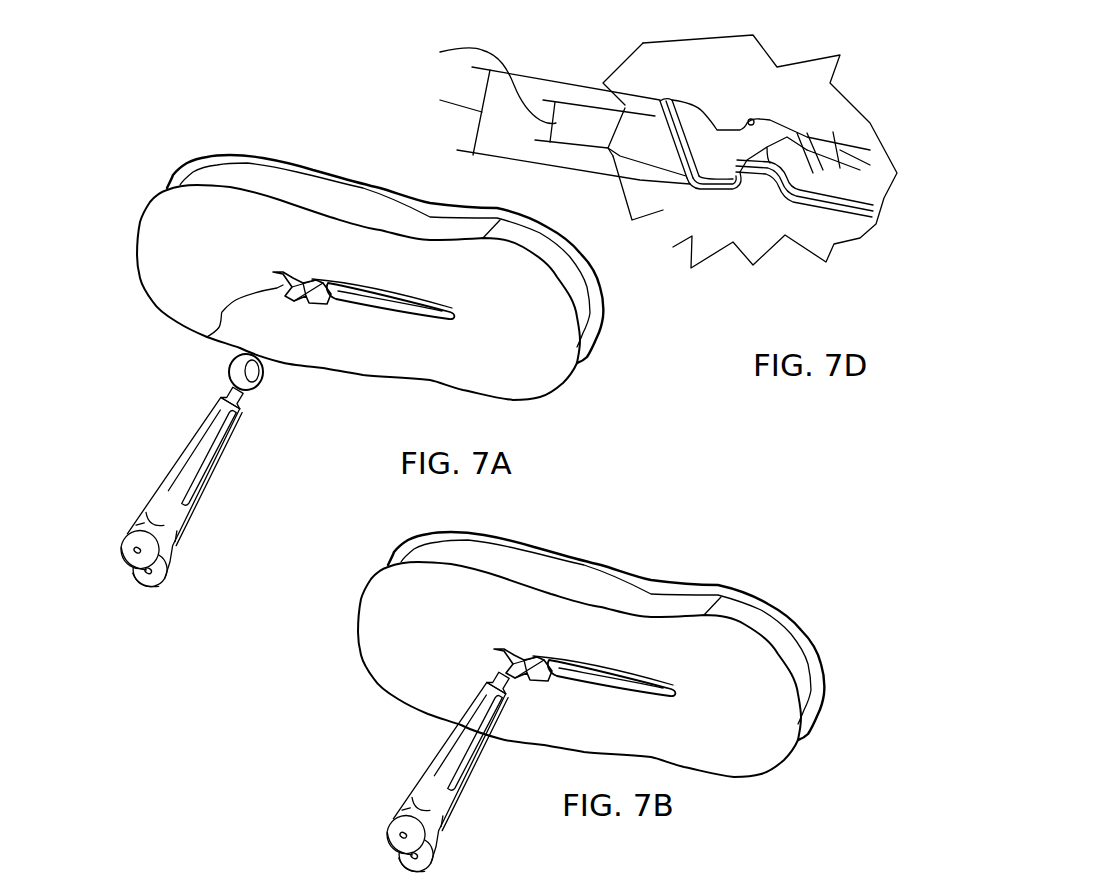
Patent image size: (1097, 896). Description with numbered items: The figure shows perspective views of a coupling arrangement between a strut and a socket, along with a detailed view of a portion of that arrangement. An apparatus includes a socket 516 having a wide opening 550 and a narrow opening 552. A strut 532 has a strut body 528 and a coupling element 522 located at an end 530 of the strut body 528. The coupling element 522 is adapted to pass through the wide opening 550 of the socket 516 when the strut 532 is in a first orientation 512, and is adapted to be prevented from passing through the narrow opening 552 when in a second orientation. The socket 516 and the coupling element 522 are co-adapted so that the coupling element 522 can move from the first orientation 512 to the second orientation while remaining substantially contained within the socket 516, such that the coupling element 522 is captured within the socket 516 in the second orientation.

In FIG. 7B, the first orientation 512 is at (298, 745).
In FIG. 7A, the socket 516 is at (205, 337).
In FIG. 7D, the socket 516 is at (675, 172).
In FIG. 7A, the coupling element 522 is at (262, 384).
In FIG. 7A, the strut body 528 is at (187, 452).
In FIG. 7A, the end 530 is at (288, 388).
In FIG. 7A, the strut 532 is at (195, 473).
In FIG. 7D, the wide opening 550 is at (481, 110).
In FIG. 7D, the narrow opening 552 is at (508, 65).